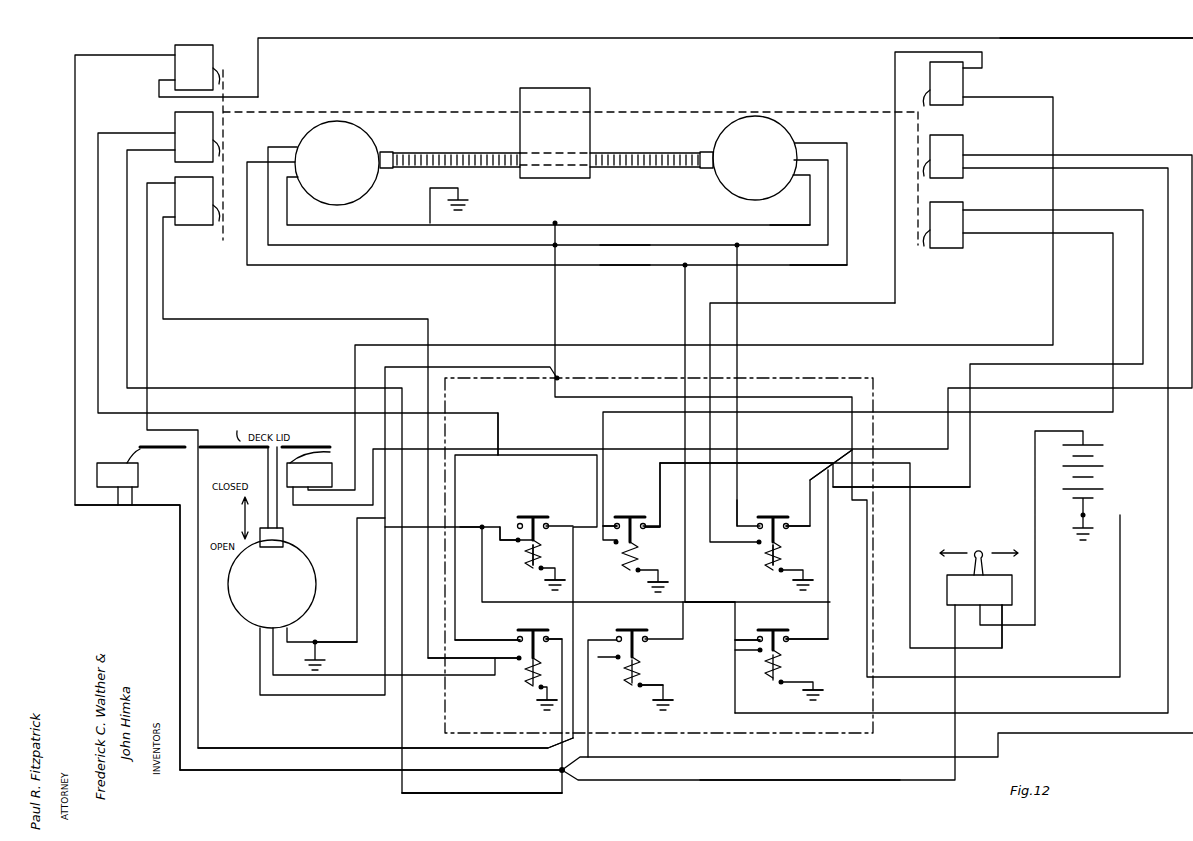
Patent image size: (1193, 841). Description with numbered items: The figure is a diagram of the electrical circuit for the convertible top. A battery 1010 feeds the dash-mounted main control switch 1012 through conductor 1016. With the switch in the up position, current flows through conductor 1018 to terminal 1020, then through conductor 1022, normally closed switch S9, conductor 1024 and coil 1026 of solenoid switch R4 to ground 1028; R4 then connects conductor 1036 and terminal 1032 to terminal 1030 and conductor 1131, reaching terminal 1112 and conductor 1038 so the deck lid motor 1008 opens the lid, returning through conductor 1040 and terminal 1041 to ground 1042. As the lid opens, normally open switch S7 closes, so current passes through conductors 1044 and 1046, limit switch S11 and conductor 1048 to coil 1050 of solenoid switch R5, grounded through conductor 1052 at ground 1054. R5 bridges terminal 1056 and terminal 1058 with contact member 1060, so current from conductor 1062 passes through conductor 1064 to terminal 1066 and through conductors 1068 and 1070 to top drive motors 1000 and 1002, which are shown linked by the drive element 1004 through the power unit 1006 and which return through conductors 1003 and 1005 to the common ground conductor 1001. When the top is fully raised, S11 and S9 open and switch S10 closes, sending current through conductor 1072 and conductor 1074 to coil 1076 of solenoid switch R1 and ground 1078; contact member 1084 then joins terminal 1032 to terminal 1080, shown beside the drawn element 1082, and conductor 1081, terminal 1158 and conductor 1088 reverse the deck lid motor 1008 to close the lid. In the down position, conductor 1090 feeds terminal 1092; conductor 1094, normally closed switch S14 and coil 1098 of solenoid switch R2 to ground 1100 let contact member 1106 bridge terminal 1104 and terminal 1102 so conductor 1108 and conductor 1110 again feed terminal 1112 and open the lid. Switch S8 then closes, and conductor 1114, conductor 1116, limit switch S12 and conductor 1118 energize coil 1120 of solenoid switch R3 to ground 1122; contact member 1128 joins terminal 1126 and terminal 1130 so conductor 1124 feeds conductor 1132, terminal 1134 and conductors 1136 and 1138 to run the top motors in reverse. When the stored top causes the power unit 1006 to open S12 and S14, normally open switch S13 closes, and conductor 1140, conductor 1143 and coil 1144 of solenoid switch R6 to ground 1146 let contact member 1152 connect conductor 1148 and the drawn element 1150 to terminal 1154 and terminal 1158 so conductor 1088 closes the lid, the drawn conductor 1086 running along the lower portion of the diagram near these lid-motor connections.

The top drive motor 1000 is at (370, 140).
The top drive motor 1002 is at (787, 136).
The drive screw 1004 is at (454, 155).
The power unit 1006 is at (588, 92).
The conductor 1003 is at (490, 223).
The conductor 1005 is at (607, 222).
The common ground conductor 1001 is at (555, 293).
The normally open switch S7 is at (118, 476).
The normally open switch S8 is at (314, 468).
The normally closed switch S9 is at (207, 207).
The switch S10 is at (211, 137).
The limit switch S11 is at (211, 67).
The limit switch S12 is at (930, 84).
The normally open switch S13 is at (930, 156).
The normally closed switch S14 is at (930, 233).
The deck lid motor 1008 is at (297, 554).
The battery 1010 is at (1096, 450).
The main control switch 1012 is at (947, 602).
The conductor 1016 is at (1031, 573).
The conductor 1018 is at (884, 781).
The terminal 1020 is at (566, 773).
The conductor 1022 is at (233, 750).
The conductor 1024 is at (211, 317).
The coil 1026 is at (536, 660).
The ground 1028 is at (535, 702).
The terminal 1030 is at (518, 638).
The terminal 1032 is at (547, 638).
The conductor 1036 is at (550, 745).
The conductor 1038 is at (321, 672).
The conductor 1040 is at (310, 619).
The terminal 1041 is at (319, 640).
The ground 1042 is at (313, 661).
The conductor 1044 is at (295, 774).
The conductor 1046 is at (89, 56).
The conductor 1048 is at (1122, 38).
The coil 1050 is at (642, 673).
The conductor 1052 is at (665, 696).
The ground 1054 is at (666, 706).
The terminal 1056 is at (707, 605).
The terminal 1058 is at (689, 632).
The contact member 1060 is at (619, 617).
The conductor 1062 is at (784, 730).
The conductor 1064 is at (690, 598).
The terminal 1066 is at (792, 411).
The conductor 1068 is at (616, 266).
The conductor 1070 is at (791, 266).
The conductor 1072 is at (444, 794).
The conductor 1074 is at (94, 131).
The coil 1076 is at (537, 547).
The ground 1078 is at (550, 580).
The terminal 1080 is at (517, 524).
The conductor 1081 is at (480, 525).
The contact 1082 is at (550, 526).
The contact member 1084 is at (533, 515).
The conductor 1086 is at (790, 650).
The conductor 1088 is at (308, 698).
The conductor 1090 is at (908, 526).
The terminal 1092 is at (835, 462).
The conductor 1094 is at (924, 483).
The coil 1098 is at (1069, 230).
The ground 1100 is at (650, 582).
The terminal 1102 is at (610, 523).
The terminal 1104 is at (644, 528).
The contact member 1106 is at (630, 513).
The conductor 1108 is at (737, 496).
The conductor 1110 is at (580, 458).
The terminal 1112 is at (754, 450).
The conductor 1114 is at (482, 586).
The conductor 1116 is at (914, 343).
The conductor 1118 is at (895, 52).
The coil 1120 is at (779, 560).
The ground 1122 is at (798, 578).
The conductor 1124 is at (820, 476).
The terminal 1126 is at (779, 547).
The contact member 1128 is at (786, 526).
The terminal 1130 is at (758, 519).
The conductor 1131 is at (492, 660).
The conductor 1132 is at (737, 353).
The terminal 1134 is at (736, 241).
The conductor 1136 is at (771, 242).
The conductor 1138 is at (646, 245).
The conductor 1140 is at (884, 450).
The conductor 1143 is at (1099, 710).
The coil 1144 is at (770, 676).
The ground 1146 is at (815, 694).
The conductor 1148 is at (842, 610).
The contact 1150 is at (786, 642).
The contact member 1152 is at (784, 630).
The terminal 1154 is at (756, 638).
The terminal 1158 is at (530, 555).
The solenoid switch R1 is at (527, 553).
The solenoid switch R2 is at (626, 554).
The solenoid switch R3 is at (770, 553).
The solenoid switch R4 is at (523, 670).
The solenoid switch R5 is at (635, 670).
The solenoid switch R6 is at (779, 665).